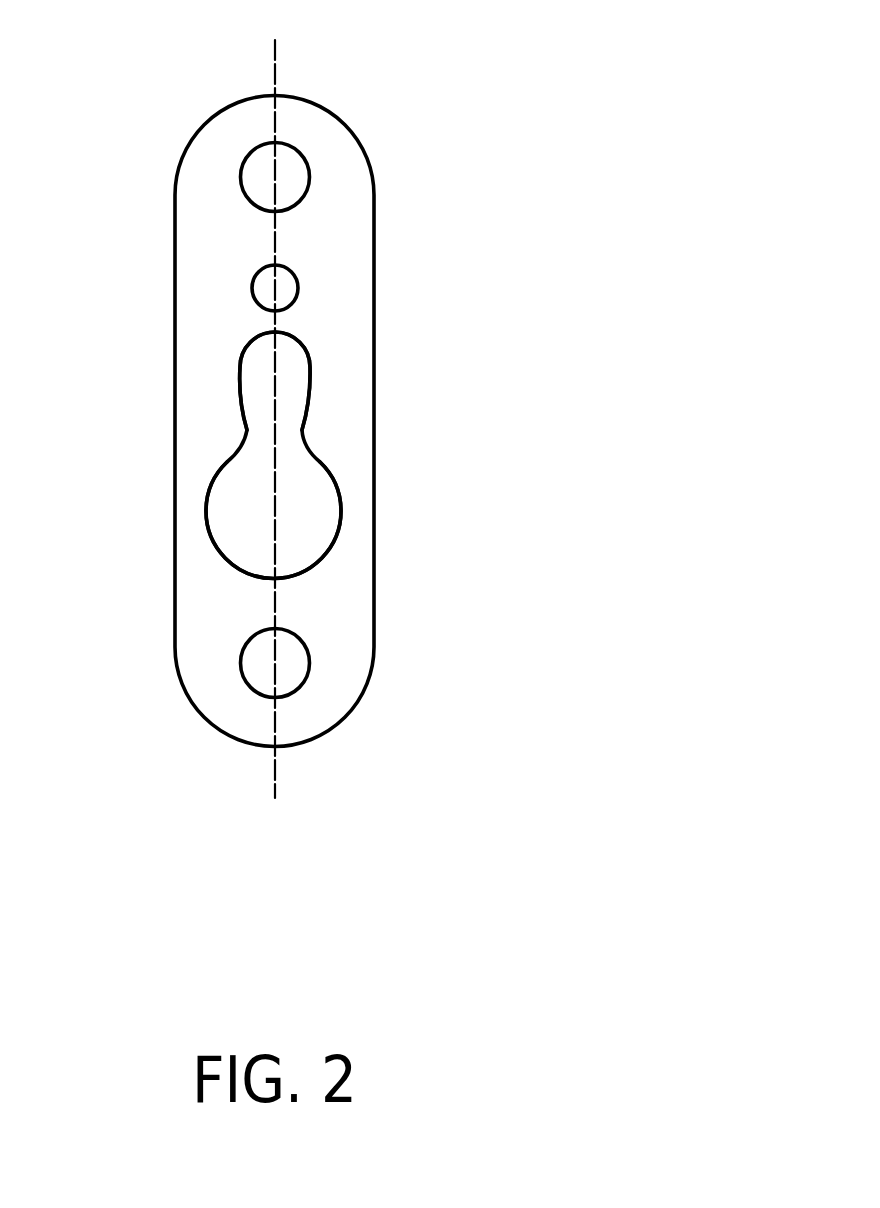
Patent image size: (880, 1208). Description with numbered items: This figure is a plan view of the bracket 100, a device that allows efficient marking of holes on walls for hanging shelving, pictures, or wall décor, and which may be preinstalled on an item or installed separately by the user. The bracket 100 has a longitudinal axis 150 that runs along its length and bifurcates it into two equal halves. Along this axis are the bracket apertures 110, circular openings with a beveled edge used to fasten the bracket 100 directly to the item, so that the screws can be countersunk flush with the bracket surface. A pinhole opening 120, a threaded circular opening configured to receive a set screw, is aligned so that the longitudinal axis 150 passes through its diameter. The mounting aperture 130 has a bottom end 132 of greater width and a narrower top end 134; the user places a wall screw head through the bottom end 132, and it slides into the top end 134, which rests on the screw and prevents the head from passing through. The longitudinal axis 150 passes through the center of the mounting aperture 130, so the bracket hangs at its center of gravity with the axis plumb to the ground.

The bracket 100 is at (182, 93).
The bracket apertures 110 is at (309, 178).
The pinhole opening 120 is at (298, 289).
The mounting aperture 130 is at (335, 468).
The bottom end 132 is at (237, 513).
The top end 134 is at (255, 373).
The longitudinal axis 150 is at (278, 65).